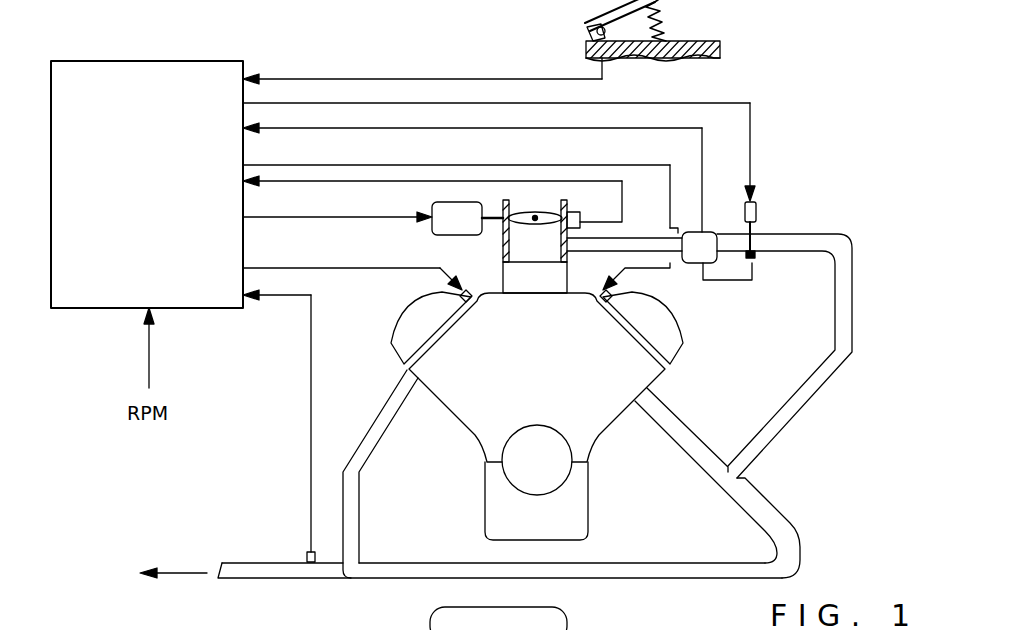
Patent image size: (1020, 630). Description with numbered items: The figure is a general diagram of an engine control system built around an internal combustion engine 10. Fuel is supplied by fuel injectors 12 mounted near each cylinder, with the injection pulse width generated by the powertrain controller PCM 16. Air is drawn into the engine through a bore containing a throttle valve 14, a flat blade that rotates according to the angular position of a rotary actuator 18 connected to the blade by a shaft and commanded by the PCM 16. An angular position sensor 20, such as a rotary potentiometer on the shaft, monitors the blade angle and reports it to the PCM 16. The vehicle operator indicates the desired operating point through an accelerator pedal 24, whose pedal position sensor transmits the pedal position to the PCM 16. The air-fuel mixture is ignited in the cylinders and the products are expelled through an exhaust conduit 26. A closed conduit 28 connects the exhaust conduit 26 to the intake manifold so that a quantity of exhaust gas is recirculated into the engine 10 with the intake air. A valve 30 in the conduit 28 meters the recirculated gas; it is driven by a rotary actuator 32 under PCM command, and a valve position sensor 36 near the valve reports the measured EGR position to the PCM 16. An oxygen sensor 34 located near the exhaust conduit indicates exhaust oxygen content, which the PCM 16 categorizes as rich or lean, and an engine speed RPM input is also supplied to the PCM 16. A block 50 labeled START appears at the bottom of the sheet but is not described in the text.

The internal combustion engine 10 is at (462, 448).
The fuel injectors 12 is at (597, 298).
The throttle valve 14 is at (530, 210).
The powertrain controller PCM 16 is at (190, 75).
The rotary actuator 18 is at (466, 205).
The angular position sensor 20 is at (583, 212).
The accelerator pedal 24 is at (730, 15).
The exhaust conduit 26 is at (382, 438).
The closed conduit 28 is at (852, 356).
The valve 30 is at (754, 240).
The rotary actuator 32 is at (758, 212).
The oxygen sensor 34 is at (306, 556).
The valve position sensor 36 is at (770, 269).
The start block 50 is at (590, 628).